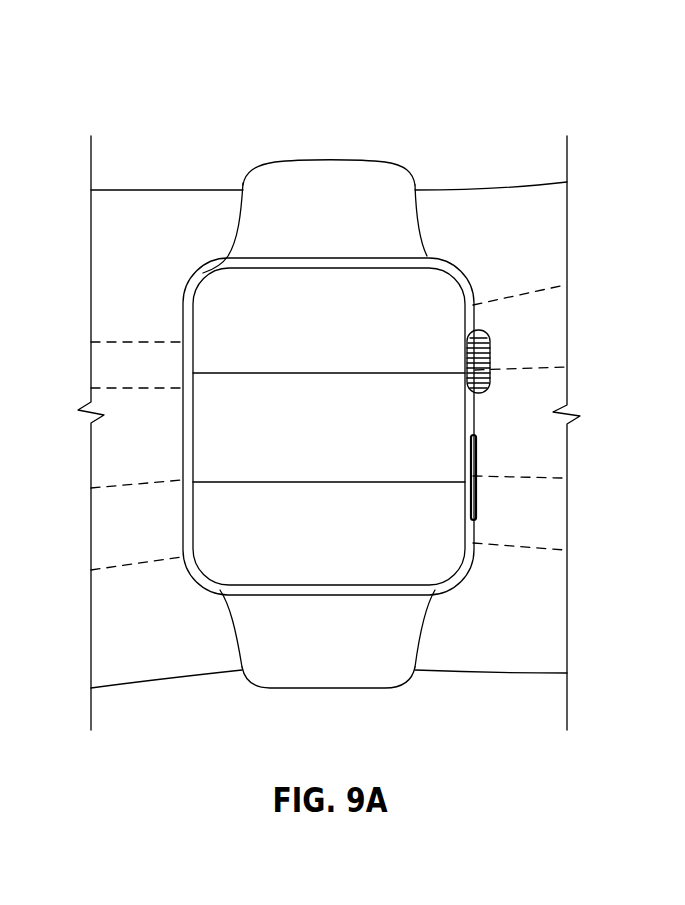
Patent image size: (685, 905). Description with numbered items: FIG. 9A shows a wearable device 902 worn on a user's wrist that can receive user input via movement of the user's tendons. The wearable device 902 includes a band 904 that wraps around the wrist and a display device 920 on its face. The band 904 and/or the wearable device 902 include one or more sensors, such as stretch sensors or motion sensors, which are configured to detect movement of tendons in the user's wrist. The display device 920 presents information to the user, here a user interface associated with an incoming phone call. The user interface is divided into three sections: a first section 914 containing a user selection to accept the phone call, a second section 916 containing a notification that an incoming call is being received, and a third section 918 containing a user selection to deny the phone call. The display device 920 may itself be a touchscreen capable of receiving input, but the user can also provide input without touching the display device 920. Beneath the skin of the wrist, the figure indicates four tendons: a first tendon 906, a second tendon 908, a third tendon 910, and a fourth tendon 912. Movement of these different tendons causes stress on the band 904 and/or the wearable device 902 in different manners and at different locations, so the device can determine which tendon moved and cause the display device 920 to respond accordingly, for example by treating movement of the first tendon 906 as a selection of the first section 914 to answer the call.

The wearable device 902 is at (305, 140).
The band 904 is at (243, 181).
The first tendon 906 is at (530, 293).
The second tendon 908 is at (542, 368).
The third tendon 910 is at (537, 477).
The fourth tendon 912 is at (535, 549).
The first section 914 is at (235, 307).
The second section 916 is at (235, 450).
The third section 918 is at (235, 528).
The display device 920 is at (408, 265).